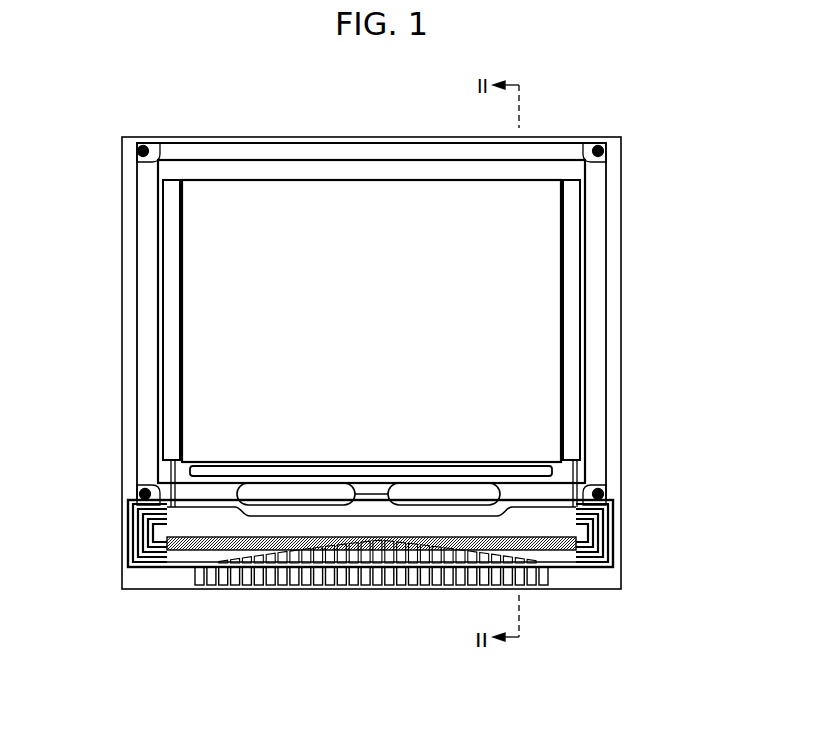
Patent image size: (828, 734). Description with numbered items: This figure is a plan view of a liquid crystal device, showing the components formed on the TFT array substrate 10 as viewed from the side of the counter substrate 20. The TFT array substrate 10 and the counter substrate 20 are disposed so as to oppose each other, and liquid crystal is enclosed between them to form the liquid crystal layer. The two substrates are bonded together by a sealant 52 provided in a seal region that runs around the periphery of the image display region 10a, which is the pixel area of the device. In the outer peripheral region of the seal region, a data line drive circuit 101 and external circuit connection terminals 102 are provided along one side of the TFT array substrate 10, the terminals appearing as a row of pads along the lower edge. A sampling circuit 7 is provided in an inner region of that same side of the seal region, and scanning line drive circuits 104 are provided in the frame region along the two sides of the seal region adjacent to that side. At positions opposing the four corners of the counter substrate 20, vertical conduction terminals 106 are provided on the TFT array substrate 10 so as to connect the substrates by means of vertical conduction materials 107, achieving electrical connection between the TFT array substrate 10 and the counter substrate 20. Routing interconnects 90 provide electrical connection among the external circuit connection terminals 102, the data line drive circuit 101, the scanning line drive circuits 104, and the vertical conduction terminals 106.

The TFT array substrate 10 is at (225, 137).
The image display region 10a is at (218, 283).
The counter substrate 20 is at (390, 141).
The sealant 52 is at (598, 264).
The scanning line drive circuit 104 is at (172, 350).
The vertical conduction terminal 106 is at (149, 151).
The vertical conduction material 107 is at (130, 493).
The sampling circuit 7 is at (380, 466).
The routing interconnects 90 is at (128, 536).
The data line drive circuit 101 is at (181, 528).
The external circuit connection terminals 102 is at (344, 570).